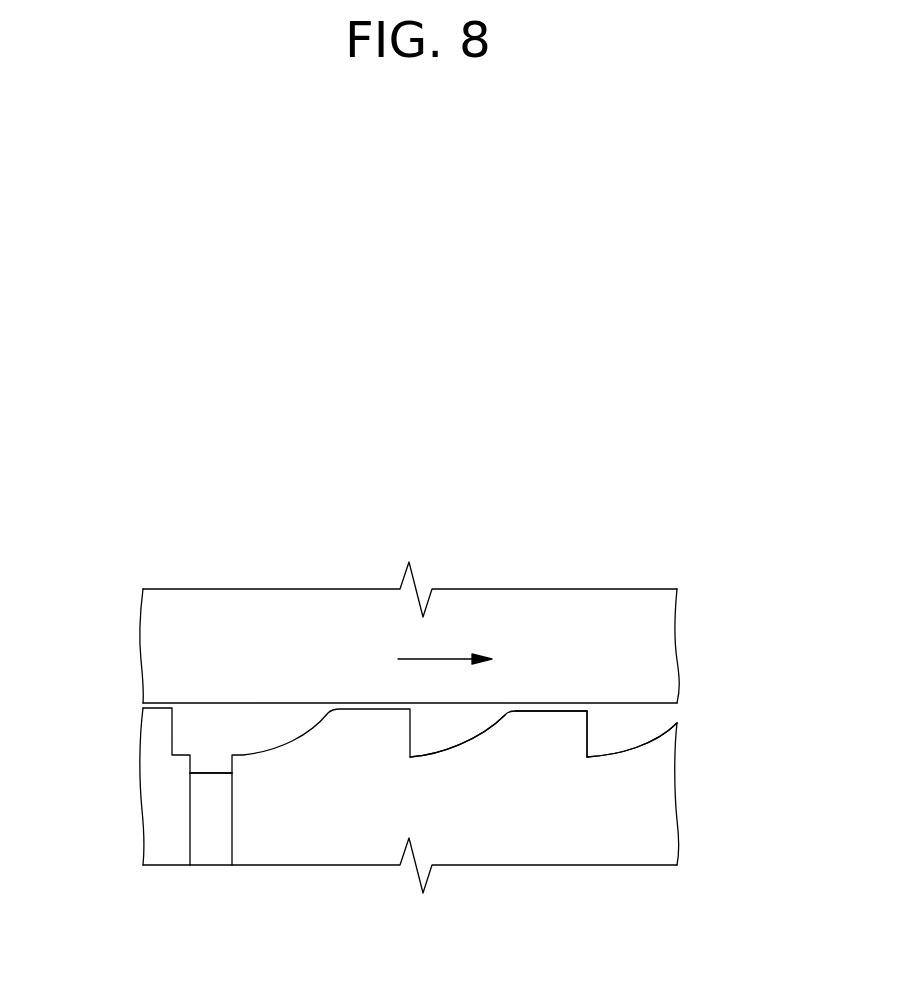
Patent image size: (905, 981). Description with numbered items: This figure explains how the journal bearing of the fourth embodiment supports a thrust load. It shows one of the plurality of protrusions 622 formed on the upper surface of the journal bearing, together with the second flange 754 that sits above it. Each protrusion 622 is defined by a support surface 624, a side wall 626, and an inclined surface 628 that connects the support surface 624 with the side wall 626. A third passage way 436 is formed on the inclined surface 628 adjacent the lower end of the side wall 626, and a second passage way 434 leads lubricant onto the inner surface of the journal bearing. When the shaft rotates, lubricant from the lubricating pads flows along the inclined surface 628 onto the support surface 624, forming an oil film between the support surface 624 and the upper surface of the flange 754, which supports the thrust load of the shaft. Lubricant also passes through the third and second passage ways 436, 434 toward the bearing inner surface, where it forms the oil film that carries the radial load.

The second flange 754 is at (283, 620).
The support surface 624 is at (546, 708).
The side wall 626 is at (589, 718).
The protrusion 622 is at (552, 732).
The inclined surface 628 is at (450, 757).
The third passage way 436 is at (208, 766).
The second passage way 434 is at (208, 828).